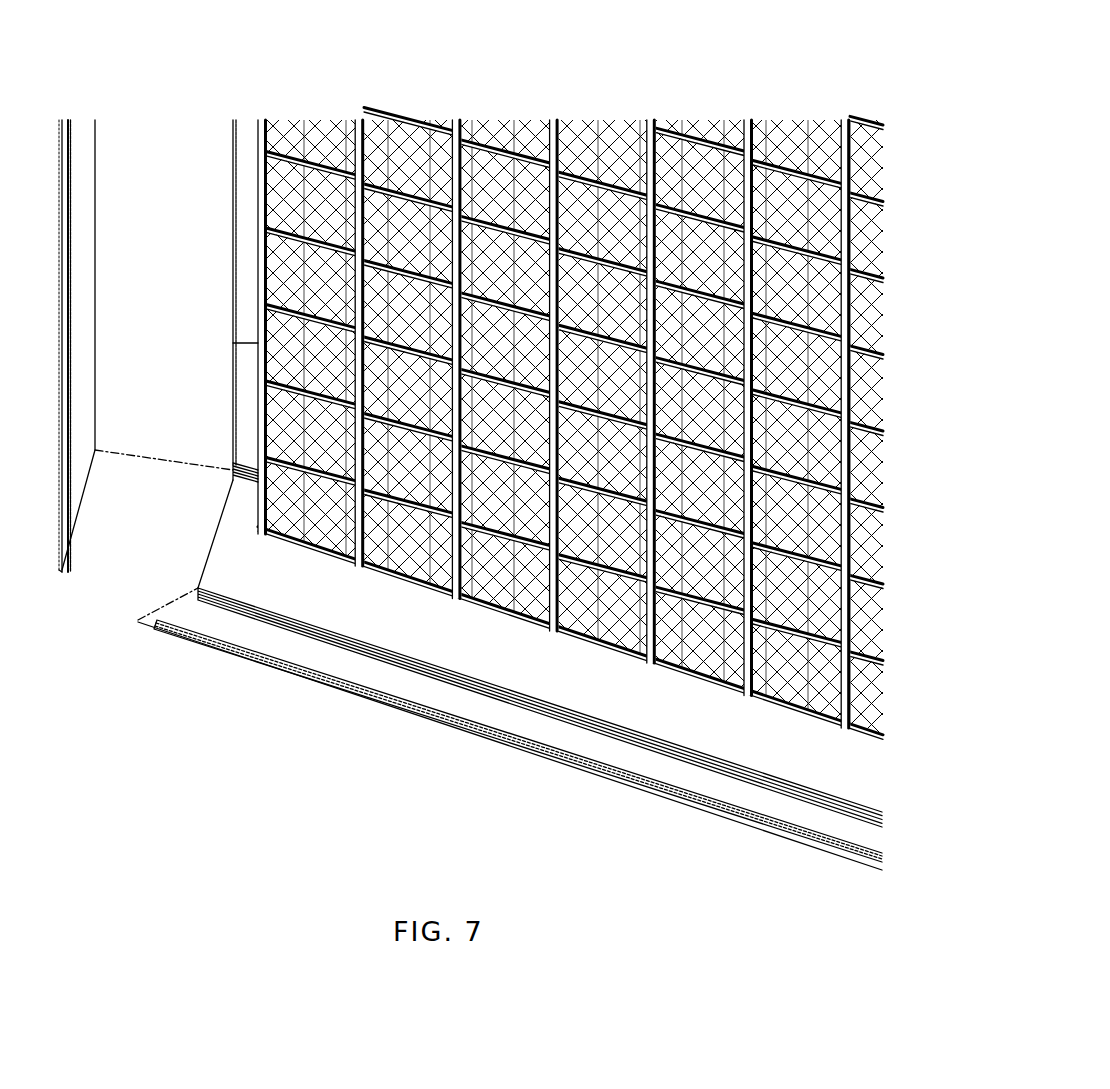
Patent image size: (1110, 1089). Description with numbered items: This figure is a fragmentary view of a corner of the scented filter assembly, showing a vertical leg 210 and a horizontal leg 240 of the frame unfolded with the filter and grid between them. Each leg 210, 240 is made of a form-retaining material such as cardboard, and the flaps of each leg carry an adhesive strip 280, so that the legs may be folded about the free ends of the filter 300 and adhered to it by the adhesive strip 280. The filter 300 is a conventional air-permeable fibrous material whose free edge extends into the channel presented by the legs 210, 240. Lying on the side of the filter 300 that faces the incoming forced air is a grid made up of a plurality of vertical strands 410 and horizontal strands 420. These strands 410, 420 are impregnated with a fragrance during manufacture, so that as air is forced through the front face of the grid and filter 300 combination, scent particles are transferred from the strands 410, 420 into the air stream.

The vertical leg 210 is at (160, 462).
The horizontal leg 240 is at (213, 528).
The adhesive strip 280 is at (68, 218).
The filter 300 is at (615, 587).
The vertical strand 410 is at (748, 140).
The horizontal strand 420 is at (595, 122).